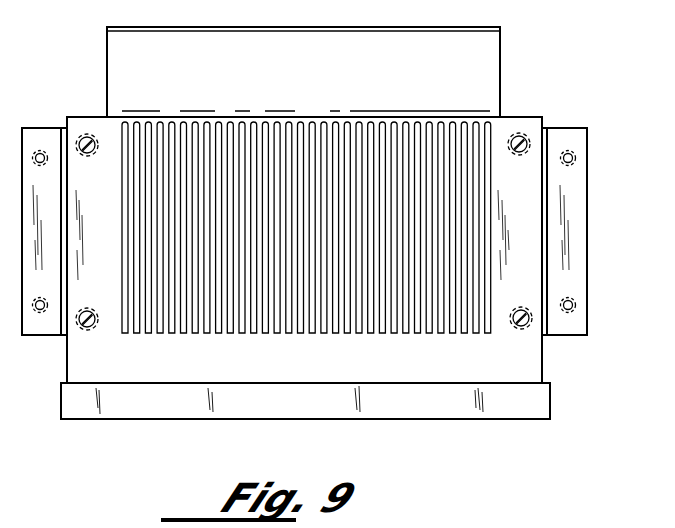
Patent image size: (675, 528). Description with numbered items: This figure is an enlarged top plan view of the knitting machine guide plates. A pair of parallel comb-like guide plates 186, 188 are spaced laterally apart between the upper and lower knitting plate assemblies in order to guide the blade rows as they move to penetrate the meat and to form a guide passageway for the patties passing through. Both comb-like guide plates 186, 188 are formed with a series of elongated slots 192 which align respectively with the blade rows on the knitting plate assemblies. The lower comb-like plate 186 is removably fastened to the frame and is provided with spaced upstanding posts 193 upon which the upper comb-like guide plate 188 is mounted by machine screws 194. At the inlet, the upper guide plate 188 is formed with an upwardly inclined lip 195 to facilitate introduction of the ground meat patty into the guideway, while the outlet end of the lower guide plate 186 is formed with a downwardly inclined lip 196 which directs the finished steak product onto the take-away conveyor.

The lower comb-like guide plate 186 is at (590, 135).
The upper comb-like guide plate 188 is at (500, 45).
The elongated slots 192 is at (138, 227).
The upstanding posts 193 is at (82, 133).
The machine screws 194 is at (91, 154).
The upwardly inclined lip 195 is at (313, 67).
The downwardly inclined lip 196 is at (310, 398).